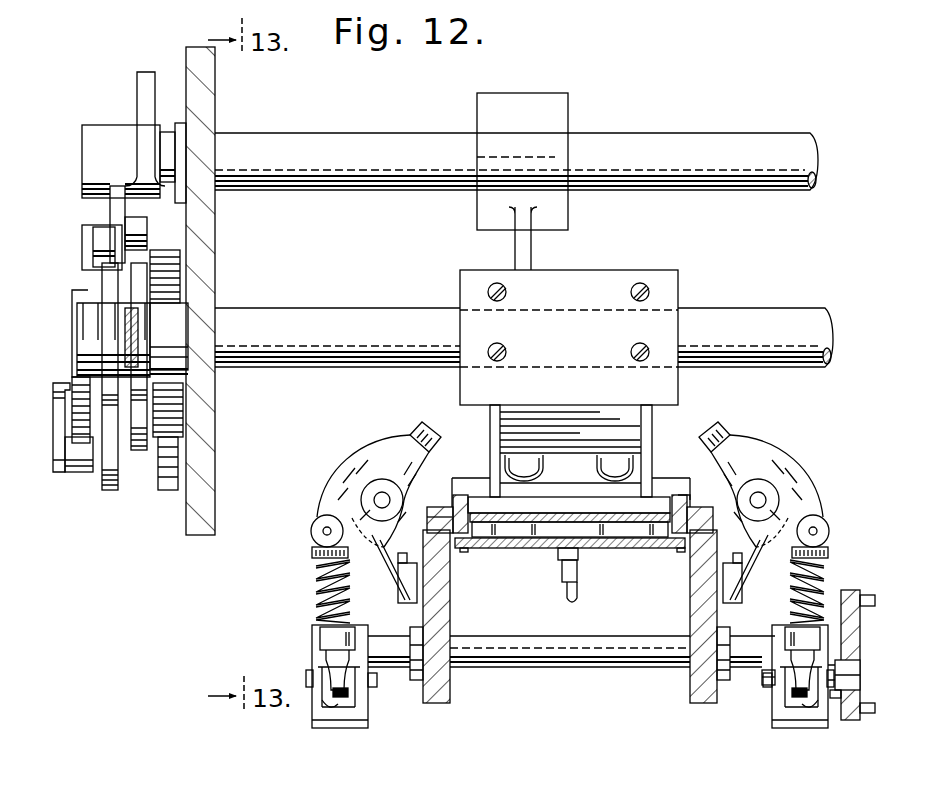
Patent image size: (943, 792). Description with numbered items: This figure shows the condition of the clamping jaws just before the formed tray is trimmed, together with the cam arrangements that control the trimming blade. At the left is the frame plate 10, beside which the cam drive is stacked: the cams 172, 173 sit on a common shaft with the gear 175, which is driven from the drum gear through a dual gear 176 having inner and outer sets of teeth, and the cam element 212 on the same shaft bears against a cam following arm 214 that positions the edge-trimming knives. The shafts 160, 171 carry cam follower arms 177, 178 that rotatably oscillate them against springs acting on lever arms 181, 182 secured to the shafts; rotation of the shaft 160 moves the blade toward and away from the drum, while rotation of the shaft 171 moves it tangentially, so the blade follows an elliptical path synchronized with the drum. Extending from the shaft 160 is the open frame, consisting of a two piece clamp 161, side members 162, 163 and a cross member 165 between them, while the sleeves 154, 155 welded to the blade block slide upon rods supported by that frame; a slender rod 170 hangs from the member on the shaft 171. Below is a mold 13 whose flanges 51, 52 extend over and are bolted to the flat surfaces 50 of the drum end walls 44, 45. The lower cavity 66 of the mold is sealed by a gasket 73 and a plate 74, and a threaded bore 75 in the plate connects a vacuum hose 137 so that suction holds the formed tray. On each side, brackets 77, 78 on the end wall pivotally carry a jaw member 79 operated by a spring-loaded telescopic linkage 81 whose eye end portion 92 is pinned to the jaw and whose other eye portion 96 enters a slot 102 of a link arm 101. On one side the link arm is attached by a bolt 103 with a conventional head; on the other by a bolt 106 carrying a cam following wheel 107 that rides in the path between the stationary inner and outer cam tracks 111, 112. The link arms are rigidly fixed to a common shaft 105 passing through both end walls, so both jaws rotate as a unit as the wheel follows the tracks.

The frame plate 10 is at (196, 530).
The mold 13 is at (461, 496).
The drum end wall 44 is at (436, 703).
The drum end wall 45 is at (696, 684).
The flat surface 50 is at (381, 537).
The flange 51 is at (427, 511).
The flange 52 is at (718, 520).
The lower cavity 66 is at (526, 530).
The gasket 73 is at (494, 537).
The plate 74 is at (613, 546).
The threaded bore 75 is at (557, 549).
The bracket 77 is at (765, 542).
The bracket 78 is at (386, 562).
The jaw member 79 is at (353, 462).
The jaw operating linkage 81 is at (312, 588).
The eye end portion 92 is at (312, 545).
The eye portion 96 is at (350, 698).
The link arm 101 is at (352, 718).
The slot 102 is at (330, 709).
The bolt 103 is at (306, 676).
The shaft 105 is at (616, 672).
The bolt 106 is at (762, 682).
The cam following wheel 107 is at (845, 723).
The inner cam track 111 is at (867, 714).
The outer cam track 112 is at (849, 593).
The hose 137 is at (567, 592).
The sleeve 154 is at (517, 467).
The sleeve 155 is at (632, 462).
The shaft 160 is at (327, 320).
The two piece clamp 161 is at (668, 298).
The side member 162 is at (487, 423).
The side member 163 is at (652, 423).
The cross member 165 is at (576, 432).
The rod 170 is at (530, 250).
The shaft 171 is at (315, 143).
The cam 172 is at (108, 492).
The cam 173 is at (140, 470).
The gear 175 is at (178, 262).
The dual gear 176 is at (168, 492).
The cam follower arm 177 is at (88, 243).
The cam follower arm 178 is at (118, 210).
The lever arm 181 is at (125, 350).
The lever arm 182 is at (140, 88).
The cam element 212 is at (80, 402).
The cam following arm 214 is at (56, 463).